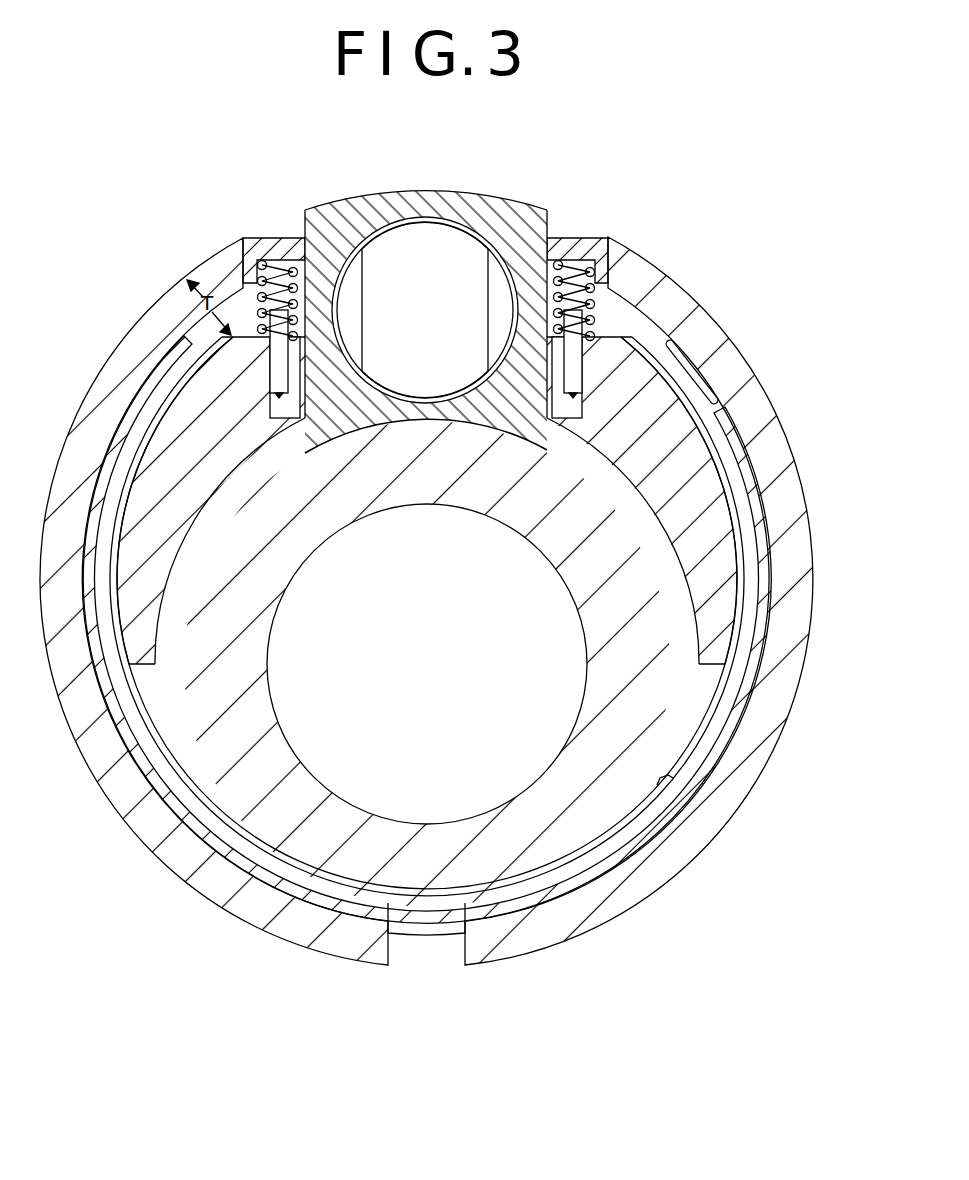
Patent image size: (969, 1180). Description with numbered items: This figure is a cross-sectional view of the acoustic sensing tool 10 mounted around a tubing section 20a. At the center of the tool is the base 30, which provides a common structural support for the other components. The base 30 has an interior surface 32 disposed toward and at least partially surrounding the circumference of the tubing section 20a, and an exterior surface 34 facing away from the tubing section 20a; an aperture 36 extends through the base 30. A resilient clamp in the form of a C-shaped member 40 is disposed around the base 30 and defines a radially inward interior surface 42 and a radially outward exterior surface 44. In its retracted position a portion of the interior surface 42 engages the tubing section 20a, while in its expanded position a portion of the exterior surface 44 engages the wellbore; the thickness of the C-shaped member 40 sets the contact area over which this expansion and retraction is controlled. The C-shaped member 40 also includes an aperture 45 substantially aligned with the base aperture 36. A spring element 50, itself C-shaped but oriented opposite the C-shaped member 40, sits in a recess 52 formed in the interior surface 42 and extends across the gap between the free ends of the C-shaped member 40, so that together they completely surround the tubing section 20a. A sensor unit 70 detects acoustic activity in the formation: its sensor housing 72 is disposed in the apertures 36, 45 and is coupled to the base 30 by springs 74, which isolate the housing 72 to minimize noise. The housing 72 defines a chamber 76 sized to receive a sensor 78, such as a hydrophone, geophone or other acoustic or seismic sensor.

The acoustic sensing tool 10 is at (422, 570).
The tubing section 20a is at (595, 822).
The base 30 is at (688, 454).
The interior surface 32 is at (742, 672).
The exterior surface 34 is at (748, 655).
The aperture 36 is at (694, 386).
The C-shaped member 40 is at (113, 388).
The interior surface 42 is at (667, 776).
The exterior surface 44 is at (694, 858).
The aperture 45 is at (604, 242).
The spring element 50 is at (228, 858).
The recess 52 is at (192, 812).
The sensor unit 70 is at (476, 191).
The sensor housing 72 is at (336, 232).
The springs 74 is at (272, 268).
The chamber 76 is at (393, 228).
The sensor 78 is at (410, 325).